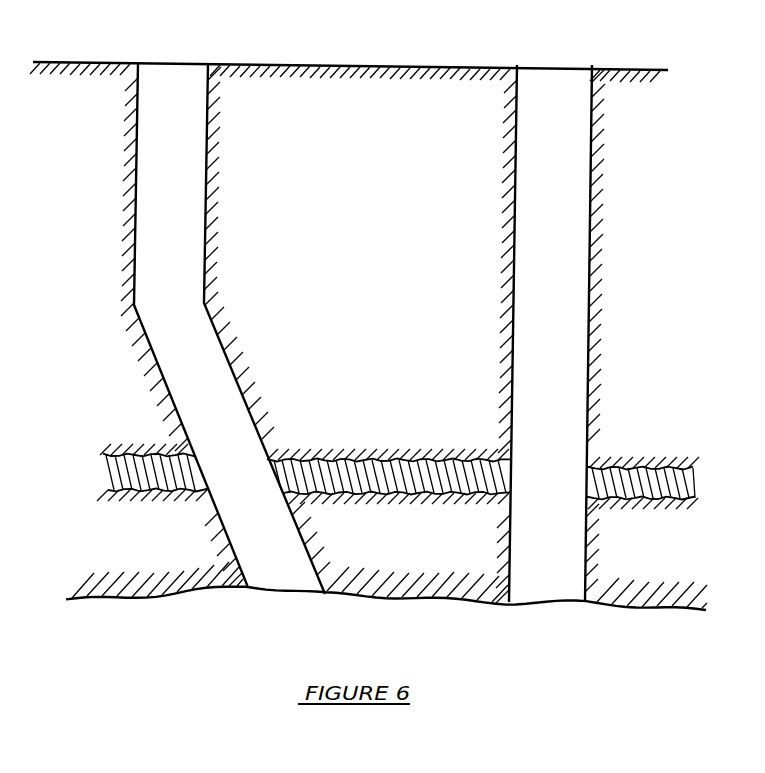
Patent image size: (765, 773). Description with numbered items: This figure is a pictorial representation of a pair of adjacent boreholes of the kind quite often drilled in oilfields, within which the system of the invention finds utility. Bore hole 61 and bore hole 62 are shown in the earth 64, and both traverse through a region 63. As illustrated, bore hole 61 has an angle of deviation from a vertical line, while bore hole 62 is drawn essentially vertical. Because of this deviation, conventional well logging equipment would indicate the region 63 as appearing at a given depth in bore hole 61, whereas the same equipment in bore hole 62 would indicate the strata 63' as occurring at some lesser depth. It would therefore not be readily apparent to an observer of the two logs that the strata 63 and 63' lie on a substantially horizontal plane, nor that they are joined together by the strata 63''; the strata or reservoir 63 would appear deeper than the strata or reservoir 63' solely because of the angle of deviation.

The bore hole 61 is at (173, 85).
The bore hole 62 is at (555, 97).
The region 63 is at (150, 495).
The strata 63' is at (642, 456).
The strata 63'' is at (389, 451).
The earth 64 is at (347, 125).